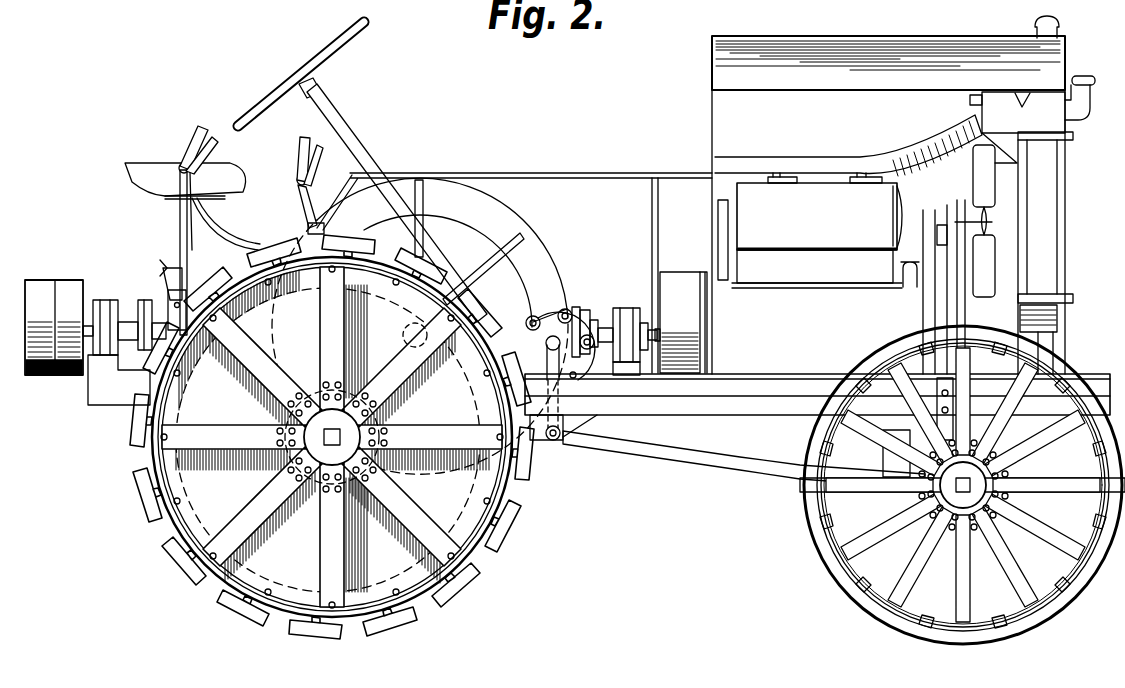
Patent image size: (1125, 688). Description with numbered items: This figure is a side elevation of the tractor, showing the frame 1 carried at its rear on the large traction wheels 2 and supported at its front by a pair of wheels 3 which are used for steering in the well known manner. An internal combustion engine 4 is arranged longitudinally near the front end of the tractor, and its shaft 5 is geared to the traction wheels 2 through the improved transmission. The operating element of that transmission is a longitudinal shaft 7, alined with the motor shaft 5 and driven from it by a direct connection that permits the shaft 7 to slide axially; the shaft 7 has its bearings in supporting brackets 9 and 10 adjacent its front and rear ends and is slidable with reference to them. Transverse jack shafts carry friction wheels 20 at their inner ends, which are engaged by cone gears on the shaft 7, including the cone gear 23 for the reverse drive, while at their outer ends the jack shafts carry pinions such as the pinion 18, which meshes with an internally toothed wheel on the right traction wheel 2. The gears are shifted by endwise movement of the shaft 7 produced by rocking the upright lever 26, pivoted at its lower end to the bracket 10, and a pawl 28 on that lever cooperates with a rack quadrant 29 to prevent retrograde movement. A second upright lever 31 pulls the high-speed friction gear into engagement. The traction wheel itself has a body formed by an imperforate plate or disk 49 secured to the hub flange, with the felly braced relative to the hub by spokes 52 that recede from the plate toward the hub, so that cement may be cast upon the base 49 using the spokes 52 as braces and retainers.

The frame 1 is at (825, 433).
The traction wheels 2 is at (349, 429).
The wheels 3 is at (833, 574).
The internal combustion engine 4 is at (819, 216).
The shaft 5 is at (658, 336).
The shaft 7 is at (590, 322).
The supporting bracket 9 is at (632, 306).
The supporting bracket 10 is at (165, 322).
The pinion 18 is at (403, 335).
The friction wheels 20 is at (538, 243).
The friction cone gear 23 is at (568, 310).
The upright lever 26 is at (194, 152).
The pawl 28 is at (190, 264).
The rack quadrant 29 is at (170, 275).
The upright lever 31 is at (298, 160).
The plate or disk 49 is at (328, 440).
The spokes 52 is at (420, 520).